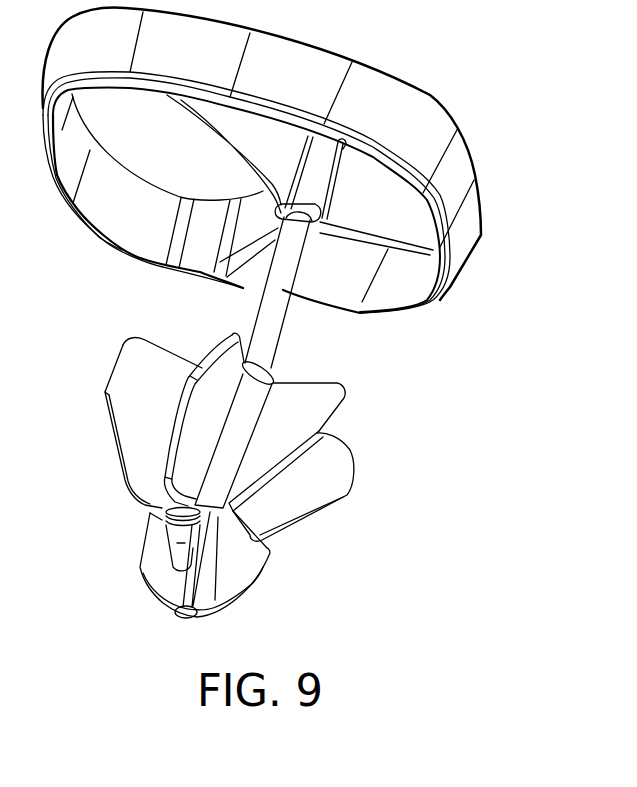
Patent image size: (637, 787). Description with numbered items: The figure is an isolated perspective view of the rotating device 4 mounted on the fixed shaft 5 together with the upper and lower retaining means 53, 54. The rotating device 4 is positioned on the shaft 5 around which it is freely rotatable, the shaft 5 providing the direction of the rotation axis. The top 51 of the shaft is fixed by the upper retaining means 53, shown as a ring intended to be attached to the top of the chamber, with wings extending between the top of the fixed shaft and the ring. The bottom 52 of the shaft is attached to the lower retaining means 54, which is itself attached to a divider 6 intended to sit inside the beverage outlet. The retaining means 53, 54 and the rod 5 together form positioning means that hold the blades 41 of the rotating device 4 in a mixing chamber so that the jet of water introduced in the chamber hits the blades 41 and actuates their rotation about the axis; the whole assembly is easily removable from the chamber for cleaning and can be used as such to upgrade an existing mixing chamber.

The rotating device 4 is at (248, 485).
The fixed shaft 5 is at (270, 323).
The divider 6 is at (240, 603).
The blades 41 is at (330, 472).
The top of the shaft 51 is at (393, 150).
The bottom of the shaft 52 is at (120, 480).
The upper retaining means 53 is at (295, 161).
The lower retaining means 54 is at (187, 543).